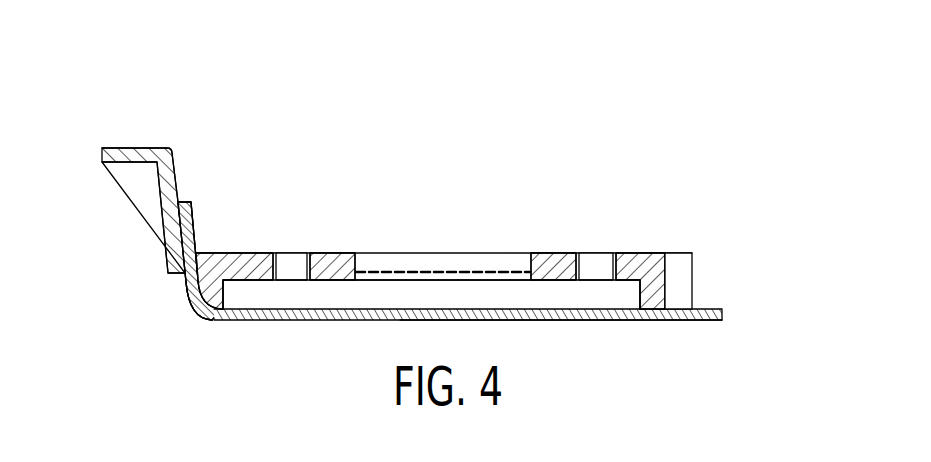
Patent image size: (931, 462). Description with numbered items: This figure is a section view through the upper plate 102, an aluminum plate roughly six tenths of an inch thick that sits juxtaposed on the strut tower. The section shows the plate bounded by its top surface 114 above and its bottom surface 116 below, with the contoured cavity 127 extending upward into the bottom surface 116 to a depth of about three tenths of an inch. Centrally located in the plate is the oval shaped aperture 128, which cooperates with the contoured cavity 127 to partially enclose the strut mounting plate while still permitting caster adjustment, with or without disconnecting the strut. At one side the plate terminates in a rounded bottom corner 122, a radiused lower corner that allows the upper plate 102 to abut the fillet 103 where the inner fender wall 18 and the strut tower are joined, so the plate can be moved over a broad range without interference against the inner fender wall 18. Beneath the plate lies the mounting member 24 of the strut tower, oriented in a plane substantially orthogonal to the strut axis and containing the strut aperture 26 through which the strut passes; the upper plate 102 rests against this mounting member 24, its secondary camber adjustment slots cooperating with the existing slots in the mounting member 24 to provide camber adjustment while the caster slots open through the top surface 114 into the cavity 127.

The inner fender wall 18 is at (180, 203).
The upper plate 102 is at (323, 212).
The oval shaped aperture 128 is at (348, 274).
The top surface 114 is at (667, 252).
The rounded bottom corner 122 is at (190, 290).
The fillet 103 is at (192, 305).
The mounting member 24 is at (206, 322).
The contoured cavity 127 is at (223, 290).
The strut aperture 26 is at (553, 322).
The bottom surface 116 is at (657, 322).